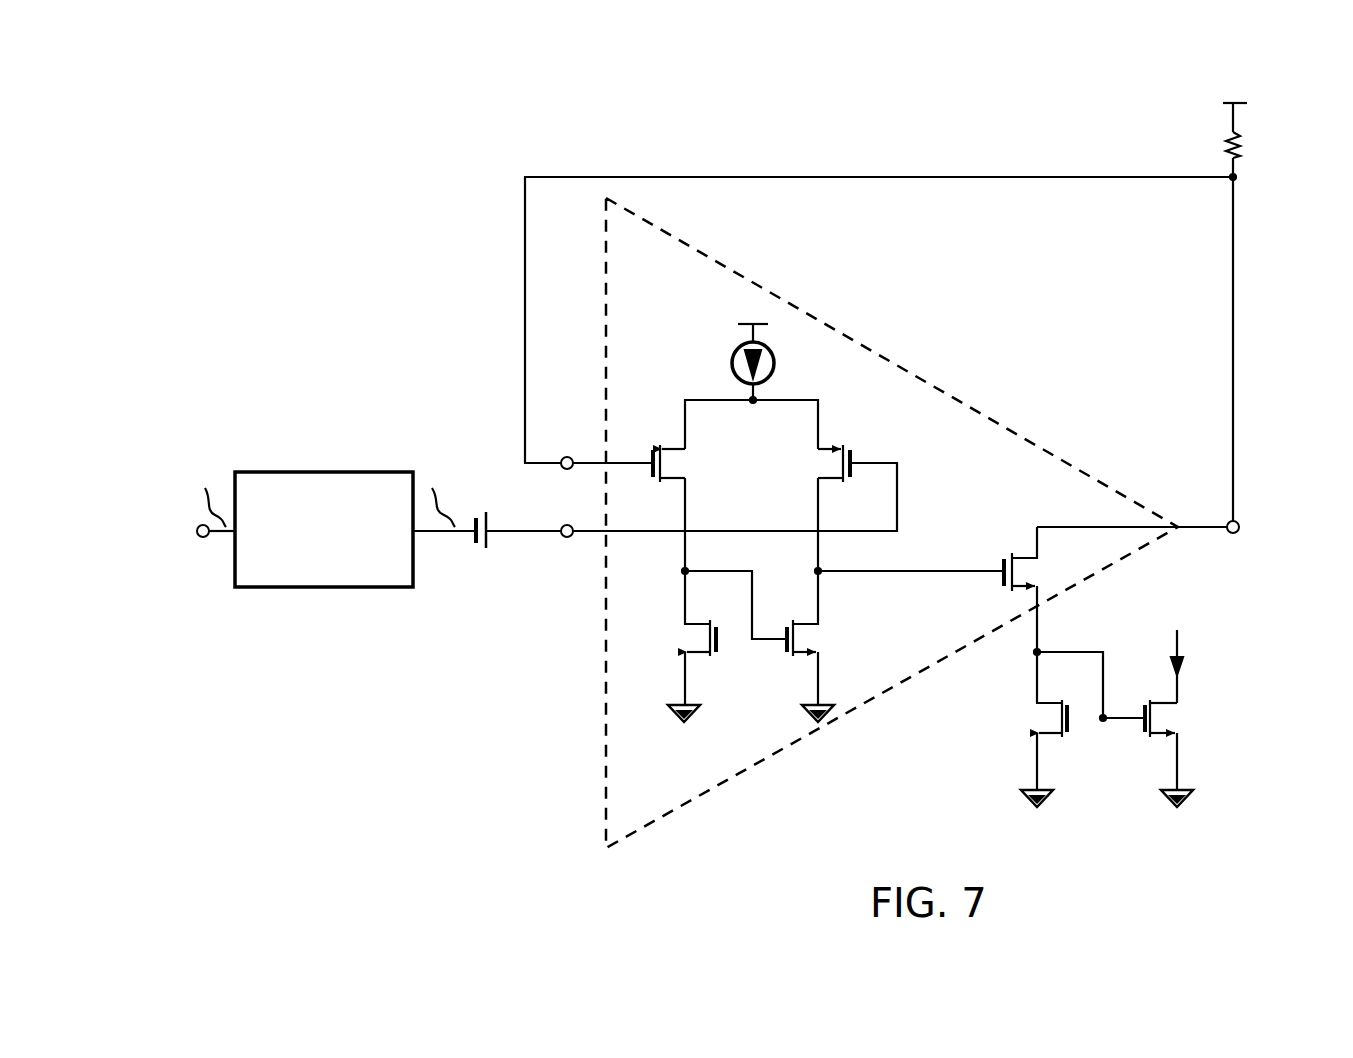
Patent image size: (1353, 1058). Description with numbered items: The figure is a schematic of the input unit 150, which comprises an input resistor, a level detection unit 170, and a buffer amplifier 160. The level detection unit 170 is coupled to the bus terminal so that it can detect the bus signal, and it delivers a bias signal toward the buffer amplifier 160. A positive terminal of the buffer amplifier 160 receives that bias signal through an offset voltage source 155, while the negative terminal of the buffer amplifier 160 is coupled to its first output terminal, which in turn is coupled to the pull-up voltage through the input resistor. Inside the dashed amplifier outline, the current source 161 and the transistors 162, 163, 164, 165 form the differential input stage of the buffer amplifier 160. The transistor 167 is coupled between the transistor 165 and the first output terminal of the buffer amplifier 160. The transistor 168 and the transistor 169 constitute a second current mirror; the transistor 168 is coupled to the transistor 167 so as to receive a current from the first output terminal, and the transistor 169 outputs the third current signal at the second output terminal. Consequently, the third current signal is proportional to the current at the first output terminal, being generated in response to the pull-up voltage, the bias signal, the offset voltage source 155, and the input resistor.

The input unit 150 is at (1333, 78).
The offset voltage source 155 is at (481, 508).
The buffer amplifier 160 is at (877, 350).
The current source 161 is at (780, 360).
The transistor 162 is at (657, 447).
The transistor 163 is at (852, 447).
The transistor 164 is at (682, 638).
The transistor 165 is at (820, 637).
The transistor 167 is at (1003, 556).
The transistor 168 is at (1031, 720).
The transistor 169 is at (1180, 718).
The level detection unit 170 is at (363, 470).